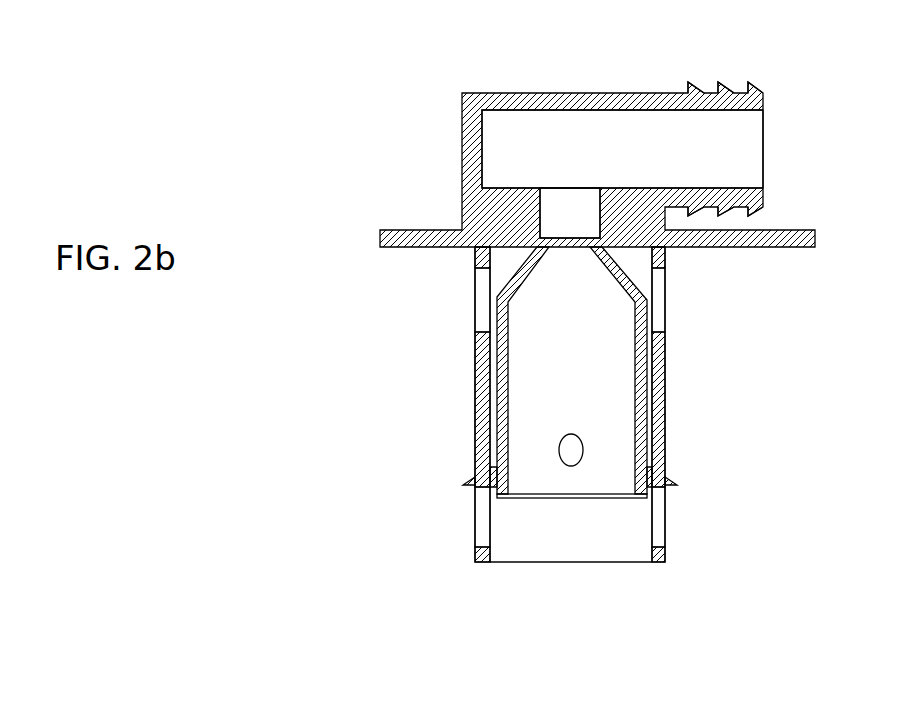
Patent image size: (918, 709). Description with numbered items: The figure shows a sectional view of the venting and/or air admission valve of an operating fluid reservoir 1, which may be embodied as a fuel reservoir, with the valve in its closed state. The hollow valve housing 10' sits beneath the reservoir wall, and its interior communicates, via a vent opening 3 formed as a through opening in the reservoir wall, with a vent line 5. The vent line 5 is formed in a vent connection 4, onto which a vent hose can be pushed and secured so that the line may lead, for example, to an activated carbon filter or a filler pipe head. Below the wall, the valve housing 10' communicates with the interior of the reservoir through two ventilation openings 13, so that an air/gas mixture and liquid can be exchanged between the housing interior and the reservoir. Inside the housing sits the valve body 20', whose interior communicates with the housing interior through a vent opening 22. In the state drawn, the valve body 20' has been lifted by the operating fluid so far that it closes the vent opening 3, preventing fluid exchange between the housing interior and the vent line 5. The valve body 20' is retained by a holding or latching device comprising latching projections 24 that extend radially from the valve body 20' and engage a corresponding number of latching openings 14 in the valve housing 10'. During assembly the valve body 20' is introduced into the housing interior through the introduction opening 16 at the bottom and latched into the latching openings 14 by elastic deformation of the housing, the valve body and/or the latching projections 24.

The operating fluid reservoir 1 is at (382, 97).
The vent opening 3 is at (560, 219).
The vent connection 4 is at (753, 96).
The vent line 5 is at (738, 140).
The valve housing 10' is at (516, 404).
The ventilation openings 13 is at (485, 293).
The latching openings 14 is at (487, 522).
The introduction opening 16 is at (520, 567).
The valve body 20' is at (618, 372).
The vent opening 22 is at (572, 448).
The latching projections 24 is at (487, 477).